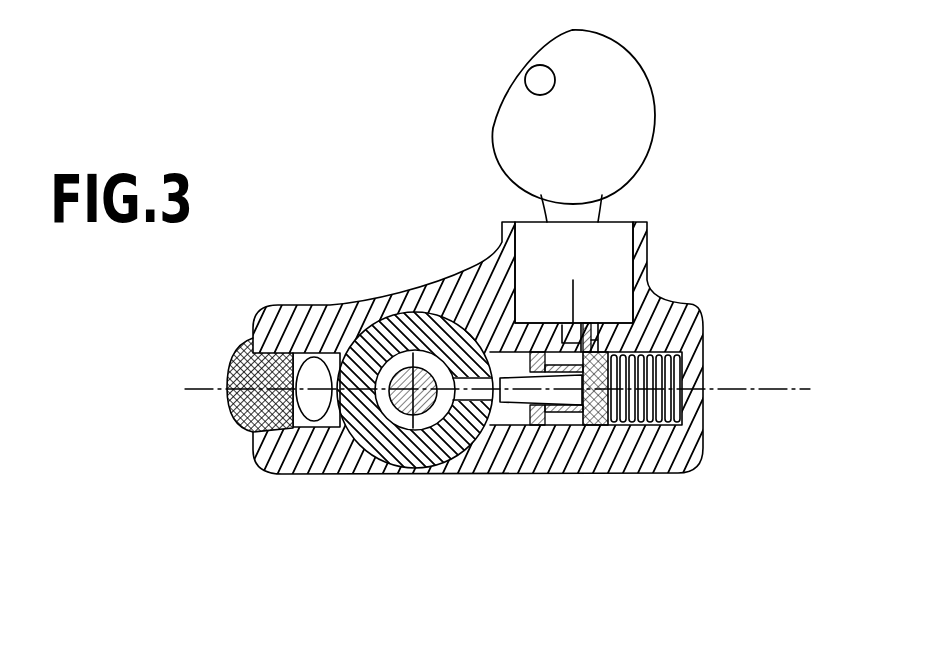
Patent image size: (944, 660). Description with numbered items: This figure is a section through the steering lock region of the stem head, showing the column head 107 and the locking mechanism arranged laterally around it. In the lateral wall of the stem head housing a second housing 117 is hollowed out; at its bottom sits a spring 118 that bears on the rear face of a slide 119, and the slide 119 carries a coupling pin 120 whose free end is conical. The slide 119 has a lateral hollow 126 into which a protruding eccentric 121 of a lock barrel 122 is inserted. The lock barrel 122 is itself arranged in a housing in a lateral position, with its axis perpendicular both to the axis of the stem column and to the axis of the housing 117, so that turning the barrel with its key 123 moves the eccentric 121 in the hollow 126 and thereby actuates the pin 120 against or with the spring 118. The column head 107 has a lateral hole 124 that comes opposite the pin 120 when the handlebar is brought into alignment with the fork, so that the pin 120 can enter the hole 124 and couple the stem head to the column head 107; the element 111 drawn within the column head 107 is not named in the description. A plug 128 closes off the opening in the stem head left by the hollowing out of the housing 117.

The column head 107 is at (362, 417).
The pin 111 is at (403, 410).
The second housing 117 is at (512, 360).
The spring 118 is at (674, 422).
The slide 119 is at (594, 402).
The coupling pin 120 is at (540, 400).
The protruding eccentric 121 is at (598, 333).
The lock barrel 122 is at (612, 229).
The key 123 is at (512, 98).
The lateral hole 124 is at (468, 398).
The lateral hollow 126 is at (562, 358).
The plug 128 is at (240, 435).